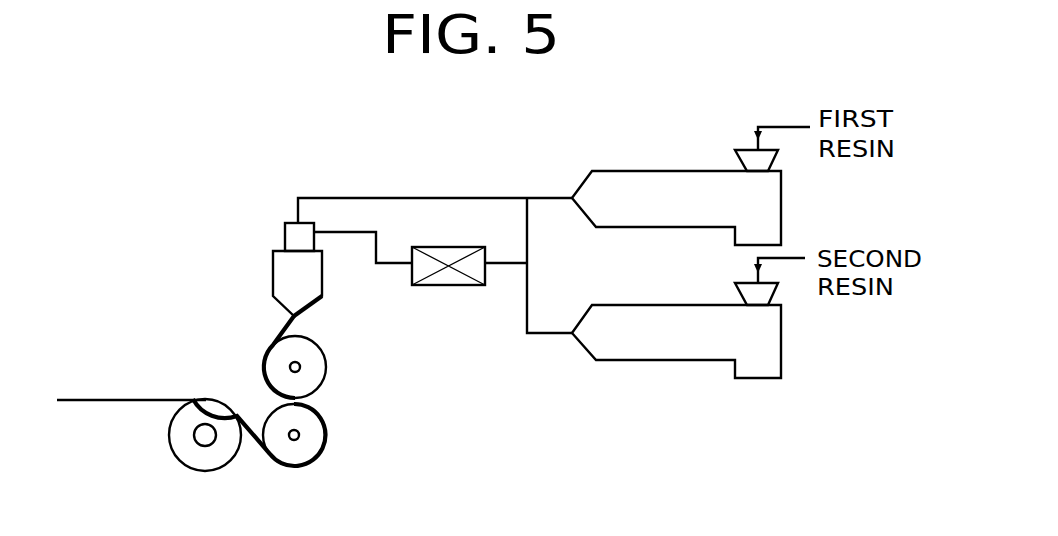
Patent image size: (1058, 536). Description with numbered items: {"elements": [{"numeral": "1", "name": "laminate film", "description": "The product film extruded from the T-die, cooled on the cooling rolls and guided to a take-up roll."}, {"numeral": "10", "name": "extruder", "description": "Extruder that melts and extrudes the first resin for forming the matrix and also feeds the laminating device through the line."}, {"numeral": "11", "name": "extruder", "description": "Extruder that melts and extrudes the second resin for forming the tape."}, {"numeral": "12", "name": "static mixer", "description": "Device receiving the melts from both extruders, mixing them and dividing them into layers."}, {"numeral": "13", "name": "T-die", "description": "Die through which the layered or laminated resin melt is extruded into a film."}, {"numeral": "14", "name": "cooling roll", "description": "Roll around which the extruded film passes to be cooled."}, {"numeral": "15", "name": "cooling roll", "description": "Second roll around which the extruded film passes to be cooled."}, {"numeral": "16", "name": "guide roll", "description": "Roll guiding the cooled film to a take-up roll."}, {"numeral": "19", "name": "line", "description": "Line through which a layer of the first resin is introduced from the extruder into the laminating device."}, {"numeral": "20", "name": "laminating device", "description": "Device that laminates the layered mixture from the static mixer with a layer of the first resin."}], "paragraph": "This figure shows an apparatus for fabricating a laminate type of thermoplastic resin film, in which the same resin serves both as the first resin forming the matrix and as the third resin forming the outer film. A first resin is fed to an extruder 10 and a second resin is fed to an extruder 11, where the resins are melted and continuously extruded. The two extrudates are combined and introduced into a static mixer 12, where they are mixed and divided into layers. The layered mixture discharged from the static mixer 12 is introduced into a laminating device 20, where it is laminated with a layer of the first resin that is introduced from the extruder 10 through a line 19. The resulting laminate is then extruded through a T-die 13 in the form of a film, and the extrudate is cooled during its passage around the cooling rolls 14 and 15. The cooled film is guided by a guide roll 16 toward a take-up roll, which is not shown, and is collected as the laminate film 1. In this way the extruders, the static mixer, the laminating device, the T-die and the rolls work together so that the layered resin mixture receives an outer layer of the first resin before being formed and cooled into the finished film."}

The laminated sheet (web) 1 is at (100, 396).
The first extruder 10 is at (607, 170).
The second extruder 11 is at (607, 362).
The static mixer 12 is at (412, 282).
The die 13 is at (273, 272).
The roll 14 is at (326, 366).
The roll 15 is at (325, 436).
The take-up roll 16 is at (169, 438).
The feed line 19 is at (409, 198).
The adapter block 20 is at (285, 238).